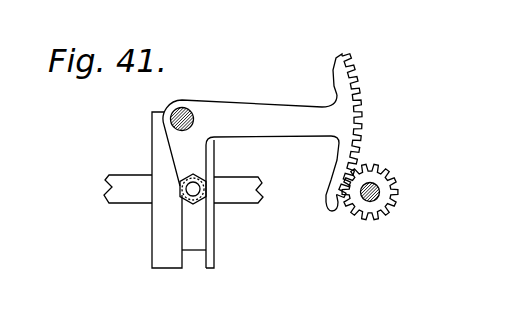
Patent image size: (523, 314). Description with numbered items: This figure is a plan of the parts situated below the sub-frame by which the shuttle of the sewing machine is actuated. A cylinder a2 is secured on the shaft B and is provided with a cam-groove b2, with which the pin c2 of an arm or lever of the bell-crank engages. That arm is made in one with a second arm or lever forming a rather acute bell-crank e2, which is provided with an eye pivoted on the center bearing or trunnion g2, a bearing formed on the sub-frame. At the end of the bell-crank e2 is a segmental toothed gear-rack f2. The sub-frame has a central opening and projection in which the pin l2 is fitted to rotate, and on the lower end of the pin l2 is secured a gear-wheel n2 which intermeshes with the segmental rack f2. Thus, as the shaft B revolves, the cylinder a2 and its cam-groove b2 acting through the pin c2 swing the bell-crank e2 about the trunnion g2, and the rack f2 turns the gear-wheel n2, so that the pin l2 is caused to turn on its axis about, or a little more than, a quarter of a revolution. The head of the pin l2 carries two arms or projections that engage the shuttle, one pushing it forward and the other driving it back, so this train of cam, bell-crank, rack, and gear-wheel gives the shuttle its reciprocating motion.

The bell-crank e2 is at (251, 181).
The center bearing or trunnion g2 is at (190, 104).
The segmental toothed gear-rack f2 is at (337, 155).
The cylinder a2 is at (183, 190).
The cam-groove b2 is at (194, 233).
The shaft B is at (247, 191).
The pin c2 is at (208, 203).
The gear-wheel n2 is at (394, 185).
The pin l2 is at (372, 195).